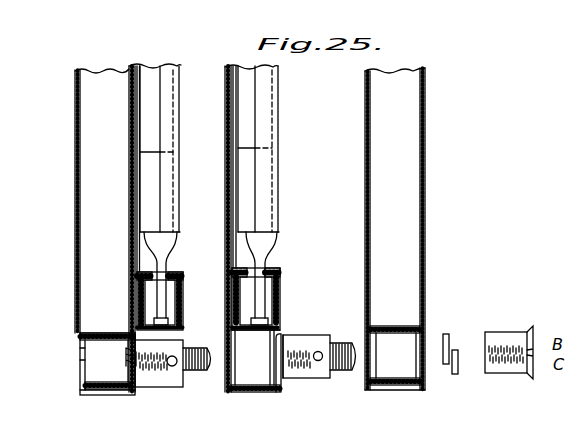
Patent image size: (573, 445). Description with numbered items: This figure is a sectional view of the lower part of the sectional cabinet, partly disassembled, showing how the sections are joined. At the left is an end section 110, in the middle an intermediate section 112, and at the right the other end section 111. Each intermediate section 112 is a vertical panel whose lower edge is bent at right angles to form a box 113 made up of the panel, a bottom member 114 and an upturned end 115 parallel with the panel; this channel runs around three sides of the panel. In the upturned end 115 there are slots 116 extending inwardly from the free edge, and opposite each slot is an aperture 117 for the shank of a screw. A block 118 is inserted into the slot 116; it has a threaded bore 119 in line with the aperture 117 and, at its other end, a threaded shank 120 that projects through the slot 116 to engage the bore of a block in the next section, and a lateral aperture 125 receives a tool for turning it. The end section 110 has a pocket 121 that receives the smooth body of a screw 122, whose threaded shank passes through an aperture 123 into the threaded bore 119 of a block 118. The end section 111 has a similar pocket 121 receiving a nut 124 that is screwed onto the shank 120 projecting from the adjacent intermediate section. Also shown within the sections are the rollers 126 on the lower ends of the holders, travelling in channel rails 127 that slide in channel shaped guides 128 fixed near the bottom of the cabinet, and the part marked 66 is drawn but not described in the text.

The end section 110 is at (71, 163).
The end section 111 is at (436, 180).
The intermediate section 112 is at (226, 167).
The rod 66 is at (177, 106).
The rollers 126 is at (168, 296).
The channel rails 127 is at (281, 291).
The channel shaped guides 128 is at (279, 274).
The pocket 121 is at (98, 338).
The screw 122 is at (88, 376).
The aperture 123 is at (131, 346).
The block 118 is at (183, 339).
The lateral aperture 125 is at (172, 366).
The threaded shank 120 is at (200, 372).
The aperture 117 is at (238, 357).
The bottom member 114 is at (243, 391).
The box 113 is at (266, 384).
The slot 116 is at (279, 336).
The upturned end 115 is at (289, 333).
The threaded bore 119 is at (308, 366).
The nut 124 is at (517, 332).